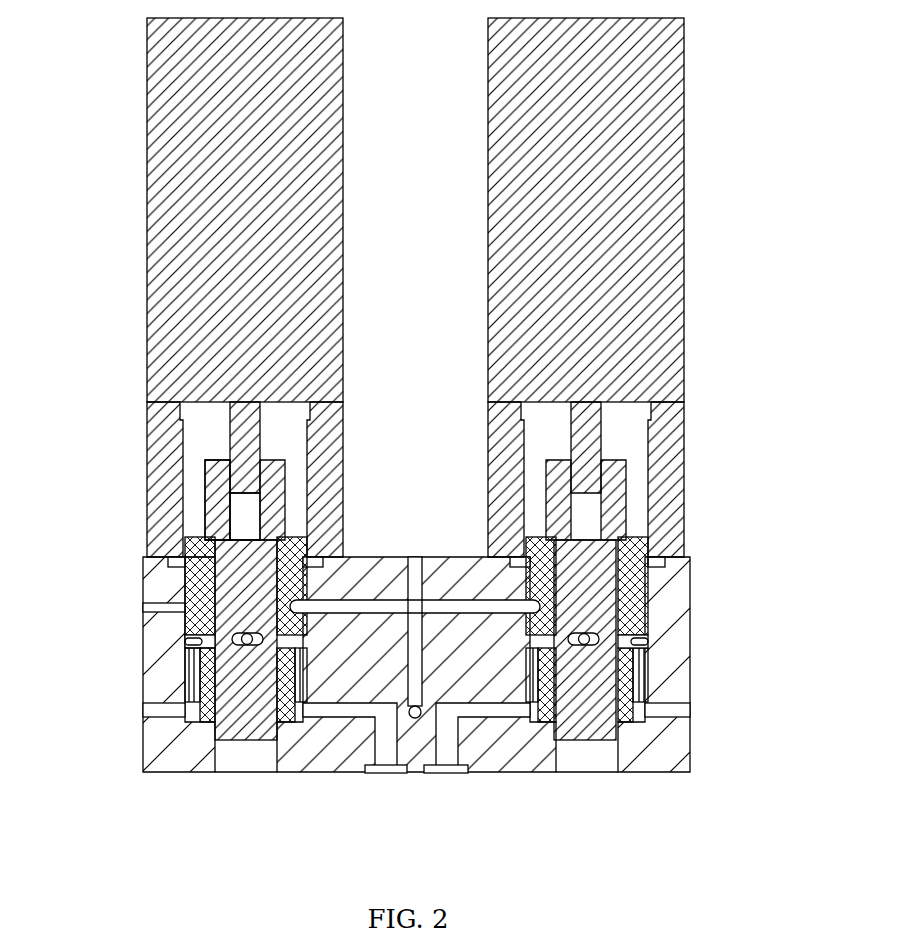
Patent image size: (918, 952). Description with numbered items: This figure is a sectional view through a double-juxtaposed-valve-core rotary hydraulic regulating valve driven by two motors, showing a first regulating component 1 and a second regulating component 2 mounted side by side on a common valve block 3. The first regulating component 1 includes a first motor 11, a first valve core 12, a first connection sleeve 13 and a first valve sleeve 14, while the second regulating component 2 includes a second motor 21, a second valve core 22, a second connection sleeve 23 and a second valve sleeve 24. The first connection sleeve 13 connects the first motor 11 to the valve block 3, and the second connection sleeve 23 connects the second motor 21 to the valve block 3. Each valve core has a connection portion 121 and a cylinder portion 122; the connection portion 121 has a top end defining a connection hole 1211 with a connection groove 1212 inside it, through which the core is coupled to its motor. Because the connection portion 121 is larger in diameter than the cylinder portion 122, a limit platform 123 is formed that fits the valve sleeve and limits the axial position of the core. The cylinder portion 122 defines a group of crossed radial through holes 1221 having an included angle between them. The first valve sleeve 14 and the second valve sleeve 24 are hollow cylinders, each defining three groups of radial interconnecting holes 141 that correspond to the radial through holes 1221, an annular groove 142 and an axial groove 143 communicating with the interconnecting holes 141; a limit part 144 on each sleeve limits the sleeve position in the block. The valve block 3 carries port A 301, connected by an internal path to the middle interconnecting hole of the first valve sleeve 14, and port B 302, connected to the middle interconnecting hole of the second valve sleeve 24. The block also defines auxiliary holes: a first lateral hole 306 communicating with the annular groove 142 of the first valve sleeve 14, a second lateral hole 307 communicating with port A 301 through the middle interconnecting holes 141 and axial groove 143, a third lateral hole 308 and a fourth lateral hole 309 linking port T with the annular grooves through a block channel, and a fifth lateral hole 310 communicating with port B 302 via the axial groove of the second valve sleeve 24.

The first regulating component 1 is at (177, 426).
The first motor 11 is at (147, 318).
The first connection sleeve 13 is at (147, 443).
The first valve core 12 is at (148, 598).
The connection portion 121 is at (148, 453).
The connection hole 1211 is at (227, 468).
The connection groove 1212 is at (240, 527).
The limit platform 123 is at (210, 543).
The cylinder portion 122 is at (144, 687).
The radial through holes 1221 is at (230, 642).
The first valve sleeve 14 is at (165, 642).
The radial interconnecting holes 141 is at (197, 642).
The annular groove 142 is at (196, 606).
The axial groove 143 is at (192, 676).
The limit part 144 is at (180, 550).
The second regulating component 2 is at (646, 398).
The second motor 21 is at (685, 283).
The second connection sleeve 23 is at (686, 478).
The second valve core 22 is at (607, 602).
The second valve sleeve 24 is at (630, 720).
The valve block 3 is at (416, 644).
The port A 301 is at (375, 768).
The port B 302 is at (455, 768).
The first lateral hole 306 is at (145, 606).
The second lateral hole 307 is at (146, 712).
The third lateral hole 308 is at (416, 560).
The fourth lateral hole 309 is at (414, 718).
The fifth lateral hole 310 is at (676, 713).